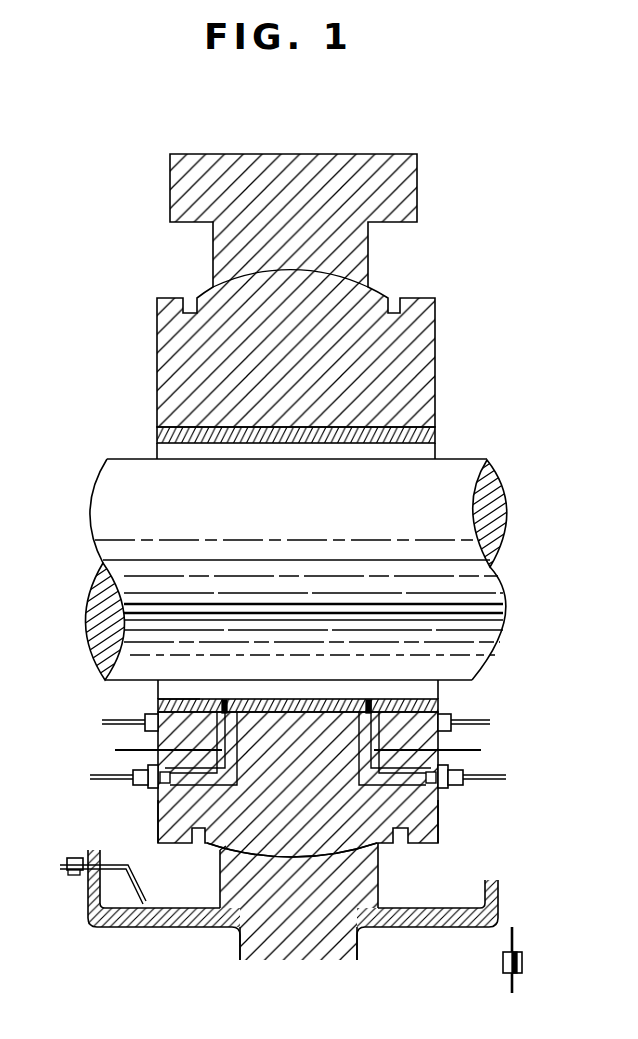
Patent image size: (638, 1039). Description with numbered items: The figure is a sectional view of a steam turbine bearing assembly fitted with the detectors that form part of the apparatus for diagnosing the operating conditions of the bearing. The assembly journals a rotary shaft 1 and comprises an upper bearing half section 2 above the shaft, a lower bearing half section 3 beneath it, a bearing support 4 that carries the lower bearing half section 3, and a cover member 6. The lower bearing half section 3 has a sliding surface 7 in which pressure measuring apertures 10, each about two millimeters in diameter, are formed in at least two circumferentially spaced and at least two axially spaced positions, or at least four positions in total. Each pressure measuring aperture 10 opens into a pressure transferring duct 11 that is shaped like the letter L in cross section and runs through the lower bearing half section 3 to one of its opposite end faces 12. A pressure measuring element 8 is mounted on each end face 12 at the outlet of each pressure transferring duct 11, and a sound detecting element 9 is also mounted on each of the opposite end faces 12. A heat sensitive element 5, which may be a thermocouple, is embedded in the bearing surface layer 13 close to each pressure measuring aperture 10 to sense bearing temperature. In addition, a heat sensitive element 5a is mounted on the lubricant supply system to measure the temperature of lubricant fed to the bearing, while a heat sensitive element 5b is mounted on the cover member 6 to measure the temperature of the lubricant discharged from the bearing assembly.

The rotary shaft 1 is at (492, 602).
The upper bearing half section 2 is at (428, 334).
The lower bearing half section 3 is at (377, 846).
The bearing support 4 is at (362, 887).
The heat sensitive element 5 is at (118, 752).
The heat sensitive element 5a is at (523, 970).
The heat sensitive element 5b is at (72, 876).
The cover member 6 is at (411, 920).
The sliding surface 7 is at (165, 700).
The pressure measuring element 8 is at (135, 786).
The sound detecting element 9 is at (147, 729).
The pressure measuring aperture 10 is at (229, 700).
The pressure transferring duct 11 is at (200, 778).
The end face 12 is at (158, 822).
The bearing surface layer 13 is at (308, 700).